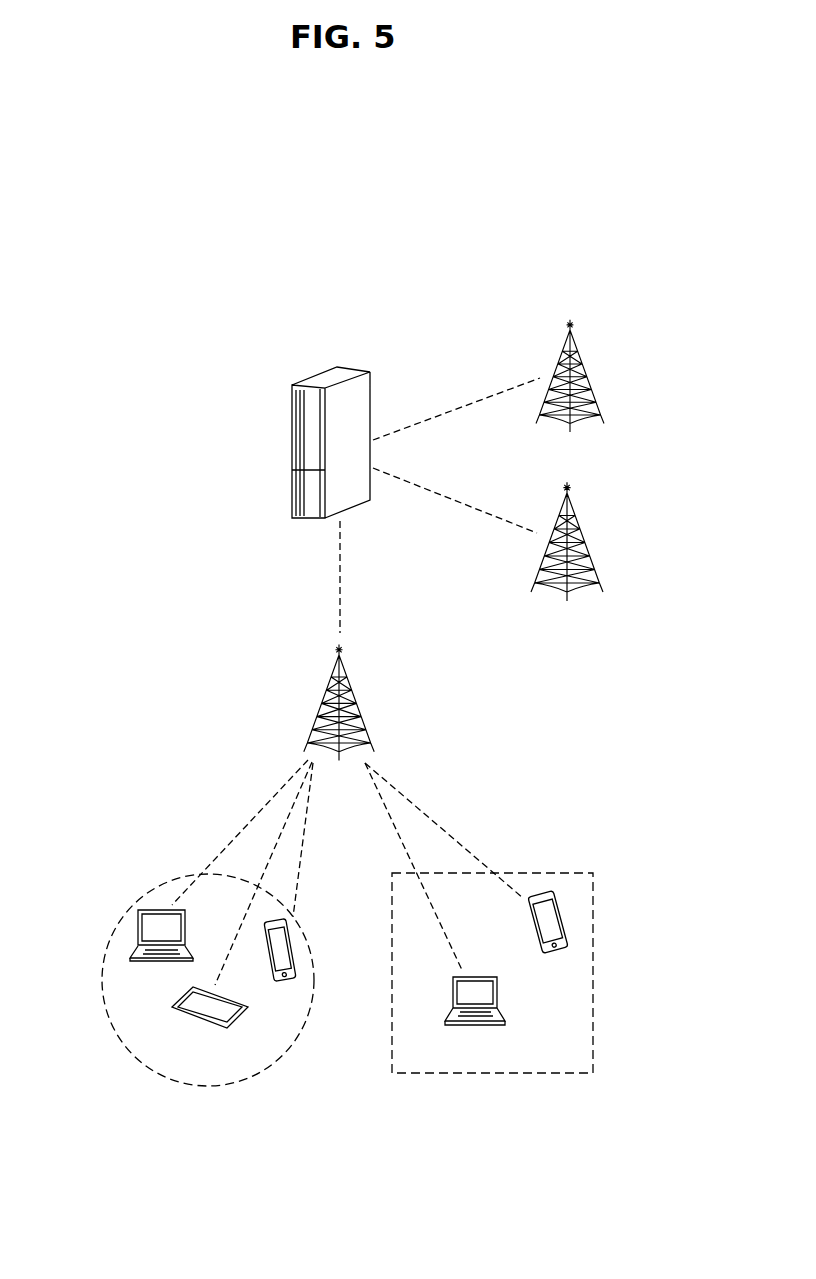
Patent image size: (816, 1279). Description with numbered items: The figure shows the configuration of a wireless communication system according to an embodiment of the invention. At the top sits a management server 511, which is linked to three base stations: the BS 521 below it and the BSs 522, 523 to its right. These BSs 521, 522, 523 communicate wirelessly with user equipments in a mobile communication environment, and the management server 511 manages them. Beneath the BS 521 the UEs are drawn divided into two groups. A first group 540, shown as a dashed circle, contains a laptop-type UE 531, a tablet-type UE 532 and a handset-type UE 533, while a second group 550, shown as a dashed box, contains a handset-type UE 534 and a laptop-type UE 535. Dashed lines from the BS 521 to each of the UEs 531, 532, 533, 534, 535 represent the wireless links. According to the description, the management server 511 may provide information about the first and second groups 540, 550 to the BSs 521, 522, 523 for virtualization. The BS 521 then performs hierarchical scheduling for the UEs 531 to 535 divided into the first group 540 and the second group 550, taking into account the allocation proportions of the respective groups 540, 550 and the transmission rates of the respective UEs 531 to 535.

The management server 511 is at (319, 370).
The base station 521 is at (356, 704).
The base station 522 is at (585, 545).
The base station 523 is at (586, 372).
The UE 531 is at (137, 925).
The UE 532 is at (240, 1020).
The UE 533 is at (288, 985).
The UE 534 is at (564, 925).
The UE 535 is at (468, 1027).
The first group 540 is at (127, 1068).
The second group 550 is at (579, 1084).